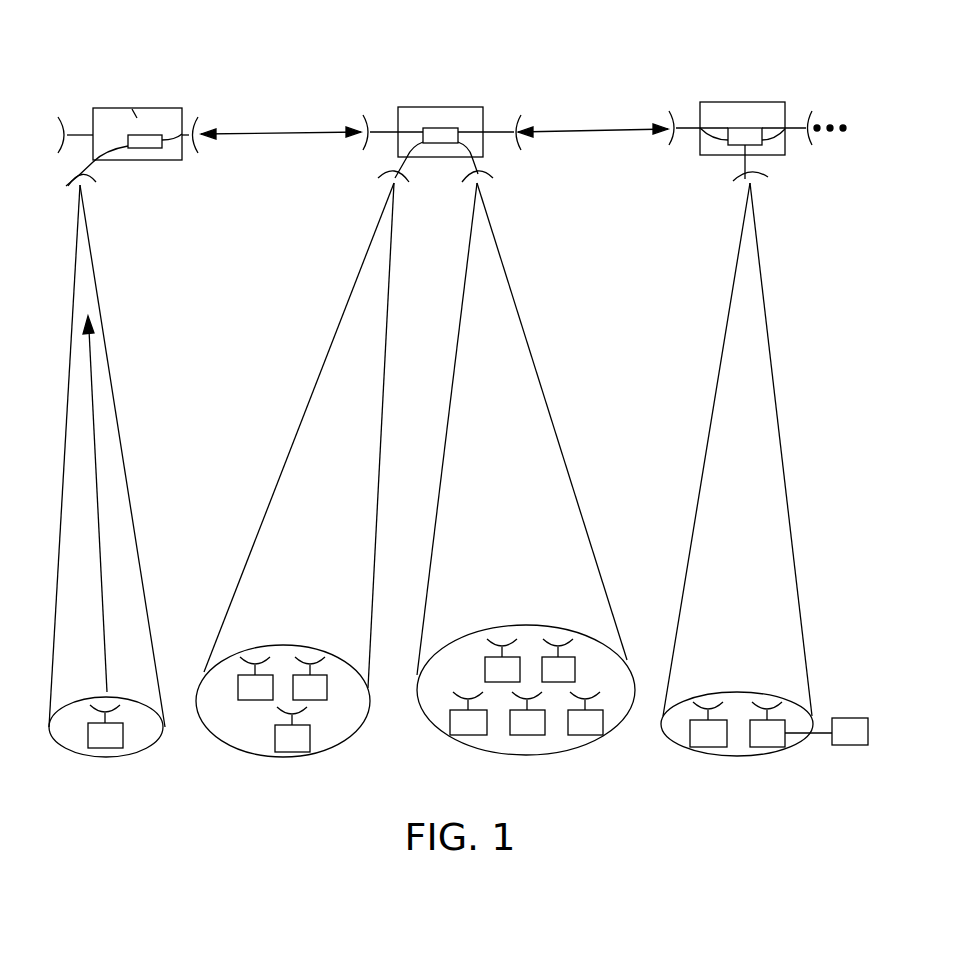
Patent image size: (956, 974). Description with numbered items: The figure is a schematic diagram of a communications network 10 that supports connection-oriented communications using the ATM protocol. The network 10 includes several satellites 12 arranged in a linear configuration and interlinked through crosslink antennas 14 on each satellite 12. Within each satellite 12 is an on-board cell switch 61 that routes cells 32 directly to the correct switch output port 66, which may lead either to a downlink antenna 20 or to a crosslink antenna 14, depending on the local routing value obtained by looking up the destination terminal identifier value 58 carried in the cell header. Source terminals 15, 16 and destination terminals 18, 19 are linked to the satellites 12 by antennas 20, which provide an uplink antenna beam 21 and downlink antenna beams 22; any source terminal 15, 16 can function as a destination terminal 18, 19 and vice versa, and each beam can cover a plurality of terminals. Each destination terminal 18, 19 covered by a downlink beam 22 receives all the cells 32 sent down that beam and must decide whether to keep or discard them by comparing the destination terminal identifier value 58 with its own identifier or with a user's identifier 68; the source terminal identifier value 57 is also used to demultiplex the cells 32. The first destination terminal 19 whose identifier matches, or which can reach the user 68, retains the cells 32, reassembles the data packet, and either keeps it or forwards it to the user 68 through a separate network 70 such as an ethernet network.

The communications network 10 is at (58, 31).
The satellite 12 is at (145, 52).
The crosslink antenna 14 is at (63, 117).
The switch output port 66 is at (128, 137).
The on-board cell switch 61 is at (152, 155).
The antenna 20 is at (84, 175).
The uplink antenna beam 21 is at (125, 545).
The cell 32 is at (103, 323).
The downlink antenna beam 22 is at (310, 457).
The source terminal 15 is at (125, 735).
The source terminal identifier value 57 is at (105, 740).
The source terminal 16 is at (322, 672).
The destination terminal 18 is at (238, 687).
The destination terminal identifier value 58 is at (250, 692).
The first destination terminal 19 is at (763, 750).
The separate network 70 is at (818, 728).
The user 68 is at (845, 738).